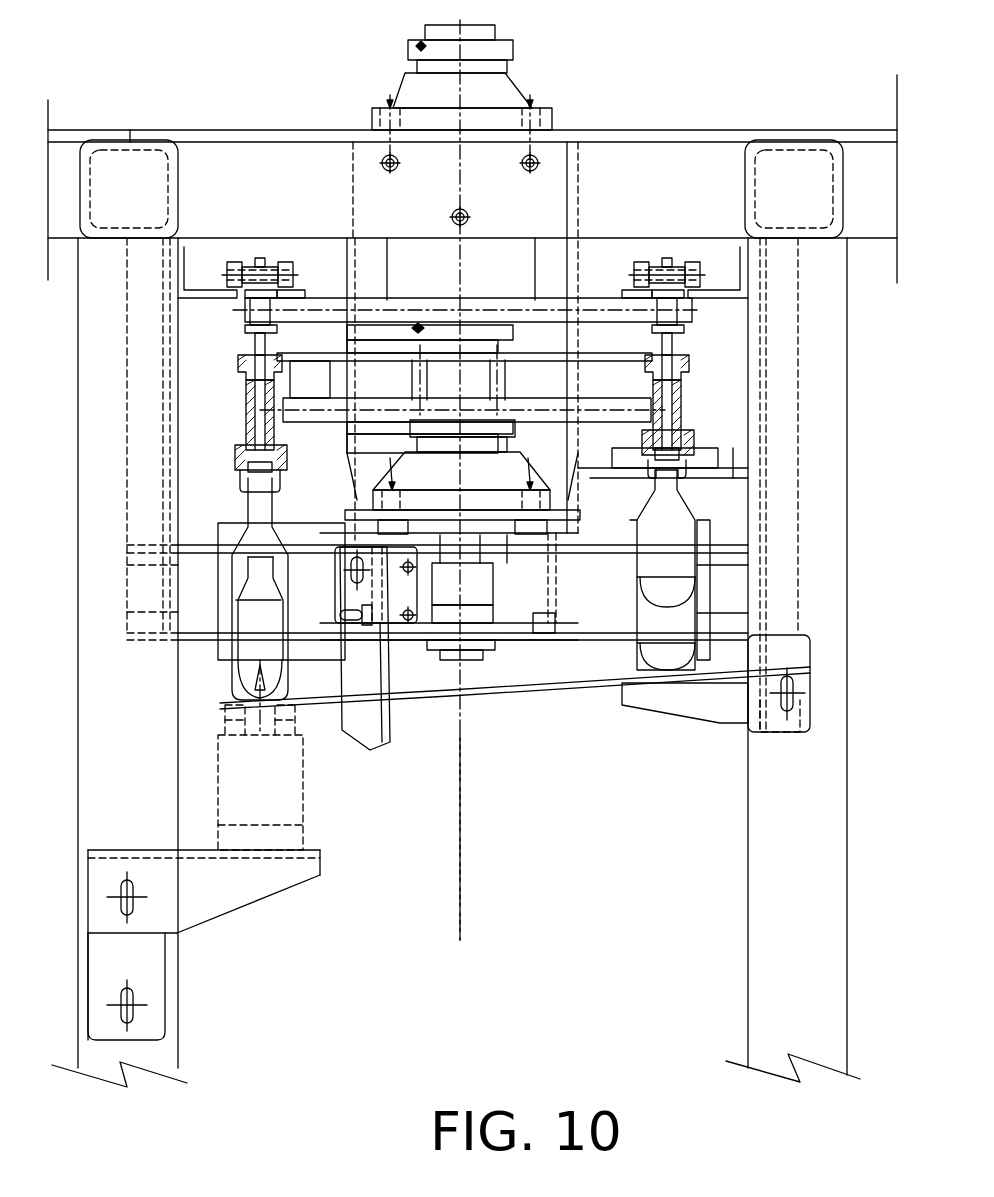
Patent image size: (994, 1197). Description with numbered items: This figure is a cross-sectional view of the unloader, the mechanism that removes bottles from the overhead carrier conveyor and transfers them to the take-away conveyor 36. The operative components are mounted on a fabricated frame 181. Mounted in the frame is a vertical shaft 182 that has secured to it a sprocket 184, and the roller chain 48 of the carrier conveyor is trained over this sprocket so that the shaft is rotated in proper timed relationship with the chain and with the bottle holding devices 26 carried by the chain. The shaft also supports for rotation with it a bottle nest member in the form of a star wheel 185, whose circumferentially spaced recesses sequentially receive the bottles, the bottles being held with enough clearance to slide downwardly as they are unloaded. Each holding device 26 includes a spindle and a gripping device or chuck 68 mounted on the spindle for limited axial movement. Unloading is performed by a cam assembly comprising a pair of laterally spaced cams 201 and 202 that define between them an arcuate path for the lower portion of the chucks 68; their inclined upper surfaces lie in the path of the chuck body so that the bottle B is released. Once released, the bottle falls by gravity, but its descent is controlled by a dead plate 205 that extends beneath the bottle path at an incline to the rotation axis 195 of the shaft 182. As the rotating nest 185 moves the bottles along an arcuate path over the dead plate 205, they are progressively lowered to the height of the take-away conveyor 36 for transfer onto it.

The fabricated frame 181 is at (748, 812).
The vertical shaft 182 is at (513, 60).
The sprocket 184 is at (500, 300).
The star wheel 185 is at (596, 630).
The rotation axis 195 is at (461, 792).
The cam 201 is at (720, 457).
The cam 202 is at (628, 462).
The dead plate 205 is at (437, 697).
The bottle holding device 26 is at (238, 396).
The roller chain 48 is at (692, 325).
The gripping device 68 is at (690, 437).
The take-away conveyor 36 is at (222, 705).
The bottle B is at (292, 616).